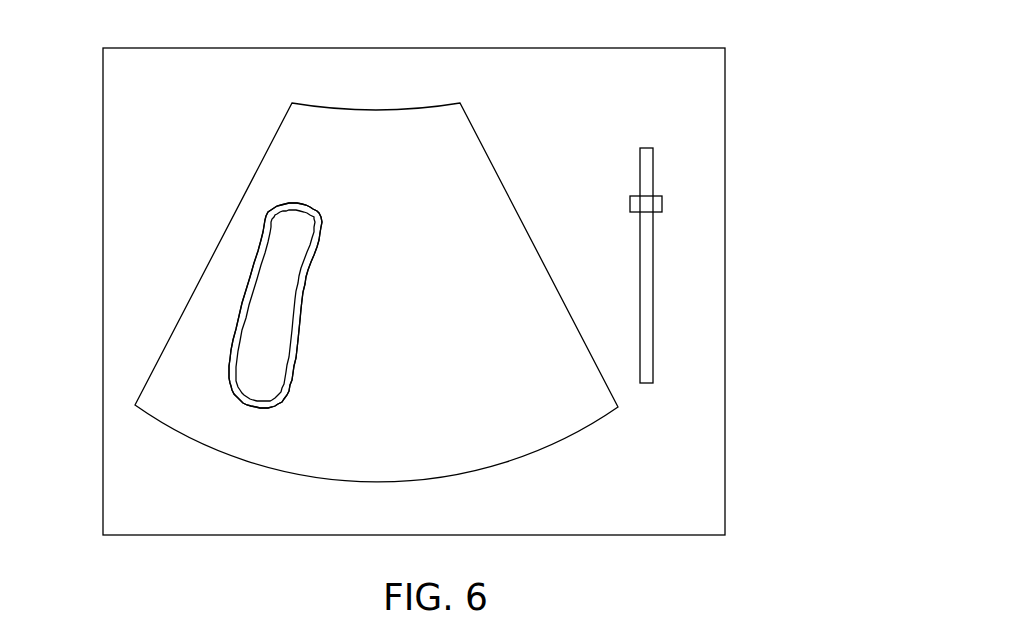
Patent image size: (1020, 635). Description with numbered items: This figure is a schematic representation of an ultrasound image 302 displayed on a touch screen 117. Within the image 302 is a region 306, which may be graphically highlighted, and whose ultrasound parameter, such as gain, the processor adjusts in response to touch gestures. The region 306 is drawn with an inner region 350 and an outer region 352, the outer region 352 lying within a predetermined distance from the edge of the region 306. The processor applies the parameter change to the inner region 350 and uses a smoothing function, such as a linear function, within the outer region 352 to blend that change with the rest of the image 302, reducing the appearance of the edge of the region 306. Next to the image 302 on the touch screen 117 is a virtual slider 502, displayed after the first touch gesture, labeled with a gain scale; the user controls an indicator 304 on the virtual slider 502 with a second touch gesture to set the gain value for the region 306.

The touch screen 117 is at (727, 102).
The image 302 is at (283, 142).
The gain slider control 304 is at (632, 203).
The region 306 is at (292, 389).
The inner region 350 is at (282, 338).
The outer region 352 is at (307, 290).
The virtual slider 502 is at (630, 168).